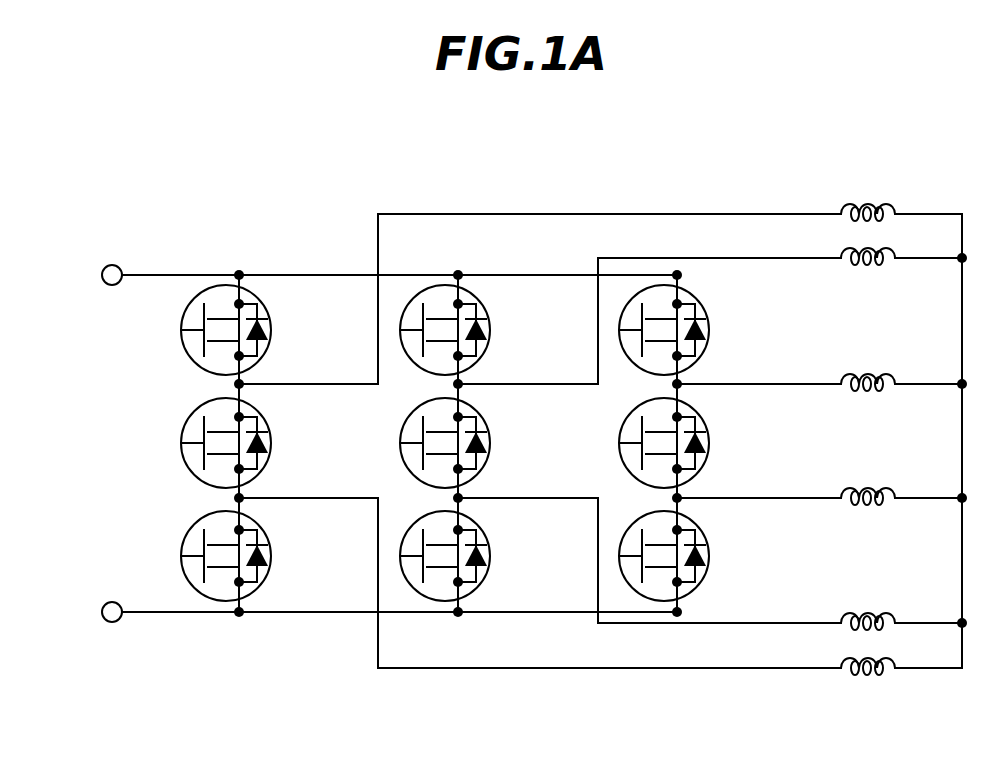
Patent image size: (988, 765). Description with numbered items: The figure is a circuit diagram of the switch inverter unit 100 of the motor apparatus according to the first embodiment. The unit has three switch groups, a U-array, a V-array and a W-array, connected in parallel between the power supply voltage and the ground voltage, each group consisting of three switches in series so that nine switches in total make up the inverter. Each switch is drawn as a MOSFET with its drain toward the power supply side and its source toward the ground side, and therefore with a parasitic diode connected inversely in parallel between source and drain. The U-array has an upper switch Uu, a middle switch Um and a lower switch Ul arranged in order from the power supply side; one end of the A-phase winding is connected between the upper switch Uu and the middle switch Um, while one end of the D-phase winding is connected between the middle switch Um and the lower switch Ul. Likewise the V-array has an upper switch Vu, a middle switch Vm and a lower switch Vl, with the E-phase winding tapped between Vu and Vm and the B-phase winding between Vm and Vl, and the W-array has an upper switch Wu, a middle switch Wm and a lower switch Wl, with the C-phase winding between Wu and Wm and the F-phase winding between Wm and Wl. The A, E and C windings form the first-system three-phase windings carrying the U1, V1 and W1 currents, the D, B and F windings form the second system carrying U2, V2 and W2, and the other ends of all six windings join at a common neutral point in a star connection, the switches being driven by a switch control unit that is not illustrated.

The power conversion circuit (three-phase inverter) 100 is at (590, 147).
The upper switch Uu is at (240, 330).
The middle switch Um is at (244, 443).
The lower switch Ul is at (236, 556).
The upper switch Vu is at (457, 330).
The middle switch Vm is at (461, 443).
The lower switch Vl is at (454, 556).
The upper switch Wu is at (679, 330).
The middle switch Wm is at (683, 443).
The lower switch Wl is at (675, 556).